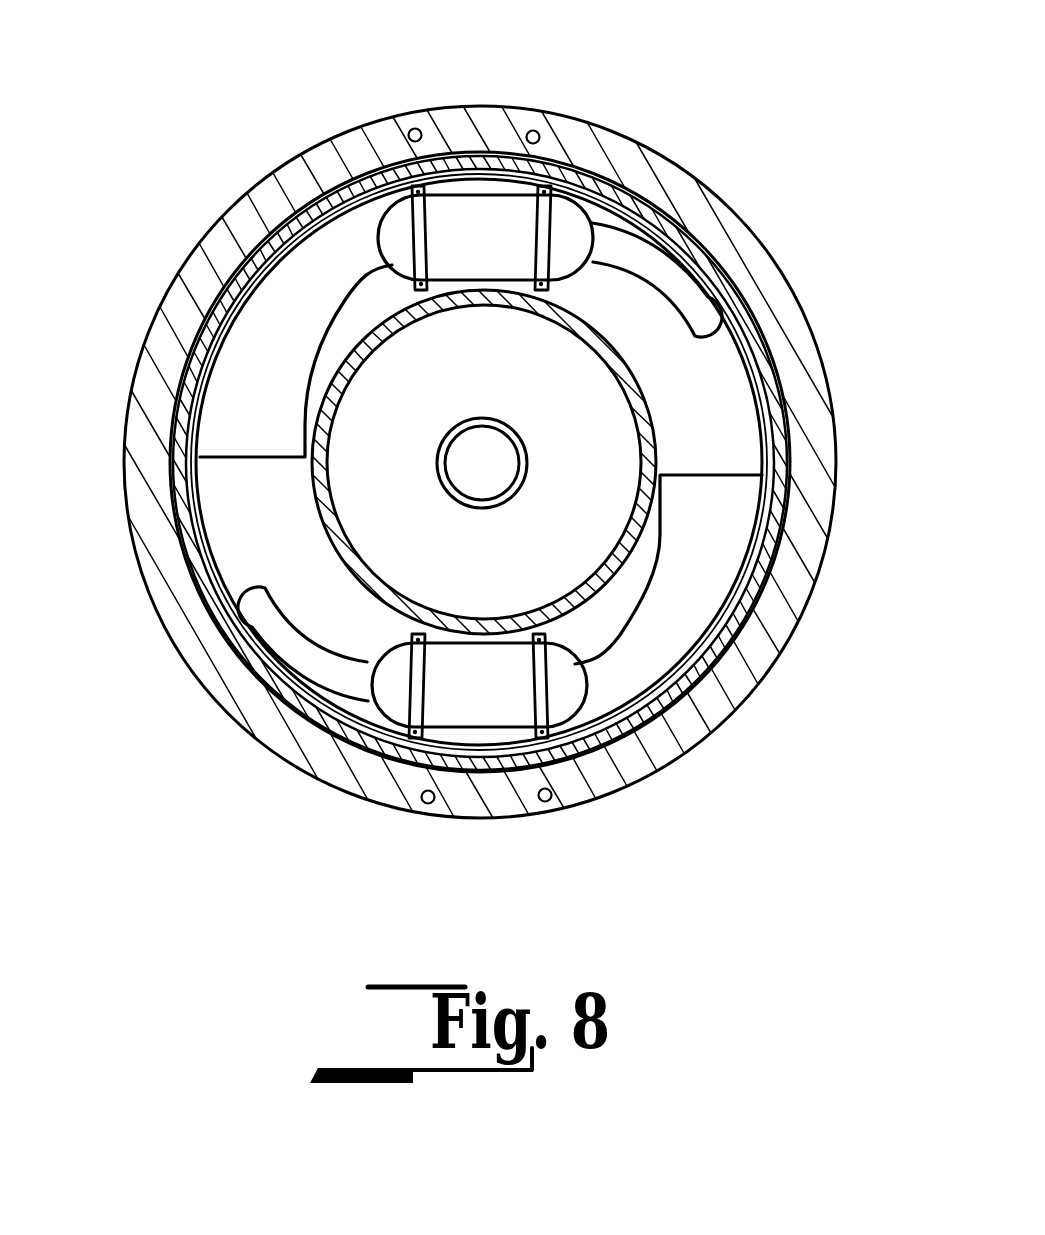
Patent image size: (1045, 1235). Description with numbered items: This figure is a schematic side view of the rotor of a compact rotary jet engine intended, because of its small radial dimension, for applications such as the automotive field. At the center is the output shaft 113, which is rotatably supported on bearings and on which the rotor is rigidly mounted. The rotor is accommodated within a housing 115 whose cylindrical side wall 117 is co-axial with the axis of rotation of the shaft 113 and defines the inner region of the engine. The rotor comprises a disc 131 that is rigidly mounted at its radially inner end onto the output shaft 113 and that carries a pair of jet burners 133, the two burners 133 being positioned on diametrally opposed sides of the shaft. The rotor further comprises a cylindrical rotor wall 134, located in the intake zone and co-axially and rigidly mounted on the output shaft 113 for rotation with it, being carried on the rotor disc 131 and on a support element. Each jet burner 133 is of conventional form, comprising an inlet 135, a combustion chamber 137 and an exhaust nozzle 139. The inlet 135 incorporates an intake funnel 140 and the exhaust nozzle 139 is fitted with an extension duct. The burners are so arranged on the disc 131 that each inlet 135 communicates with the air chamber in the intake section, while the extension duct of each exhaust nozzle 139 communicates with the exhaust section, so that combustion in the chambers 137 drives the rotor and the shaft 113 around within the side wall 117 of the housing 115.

The output shaft 113 is at (463, 472).
The housing 115 is at (150, 612).
The cylindrical side wall 117 is at (642, 786).
The disc 131 is at (717, 363).
The jet burner 133 is at (502, 461).
The cylindrical rotor wall 134 is at (383, 336).
The inlet 135 is at (480, 492).
The combustion chamber 137 is at (443, 708).
The exhaust nozzle 139 is at (667, 280).
The intake funnel 140 is at (725, 502).